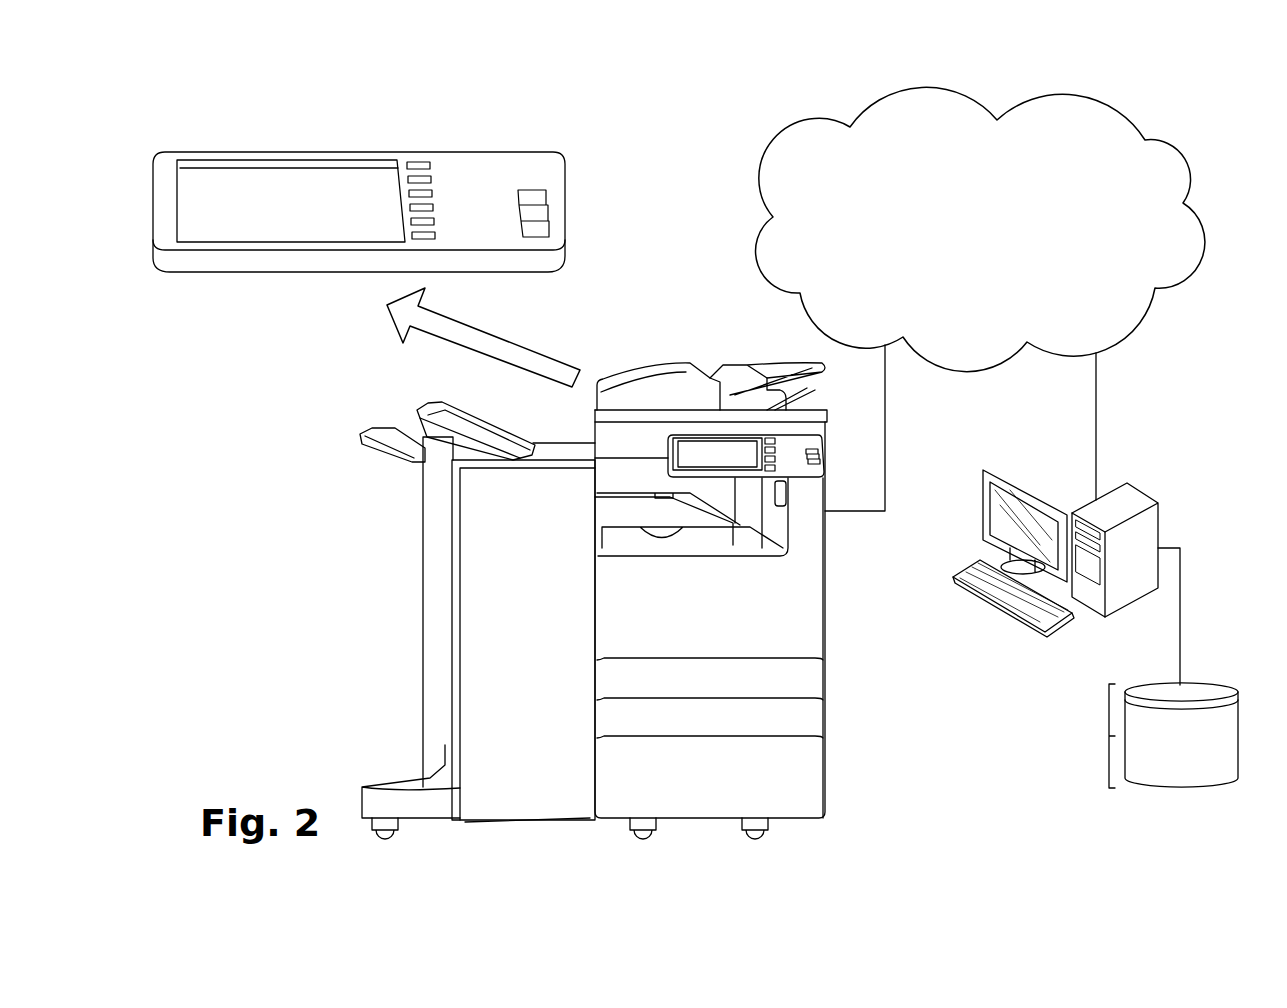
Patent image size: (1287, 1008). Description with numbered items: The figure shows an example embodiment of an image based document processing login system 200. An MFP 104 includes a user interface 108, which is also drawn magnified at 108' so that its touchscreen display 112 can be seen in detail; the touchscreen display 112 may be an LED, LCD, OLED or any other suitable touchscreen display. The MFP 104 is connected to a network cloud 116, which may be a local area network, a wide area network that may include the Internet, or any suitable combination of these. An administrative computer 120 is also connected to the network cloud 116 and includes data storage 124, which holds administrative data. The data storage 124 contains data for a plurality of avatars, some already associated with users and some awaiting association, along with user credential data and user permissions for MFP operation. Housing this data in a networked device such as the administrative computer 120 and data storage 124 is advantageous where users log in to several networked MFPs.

The MFP 104 is at (627, 580).
The user interface 108 is at (746, 399).
The magnified user interface 108' is at (390, 192).
The touchscreen display 112 is at (362, 185).
The network cloud 116 is at (1155, 312).
The administrative computer 120 is at (1158, 518).
The data storage 124 is at (1160, 788).
The image based document processing login system 200 is at (1195, 124).